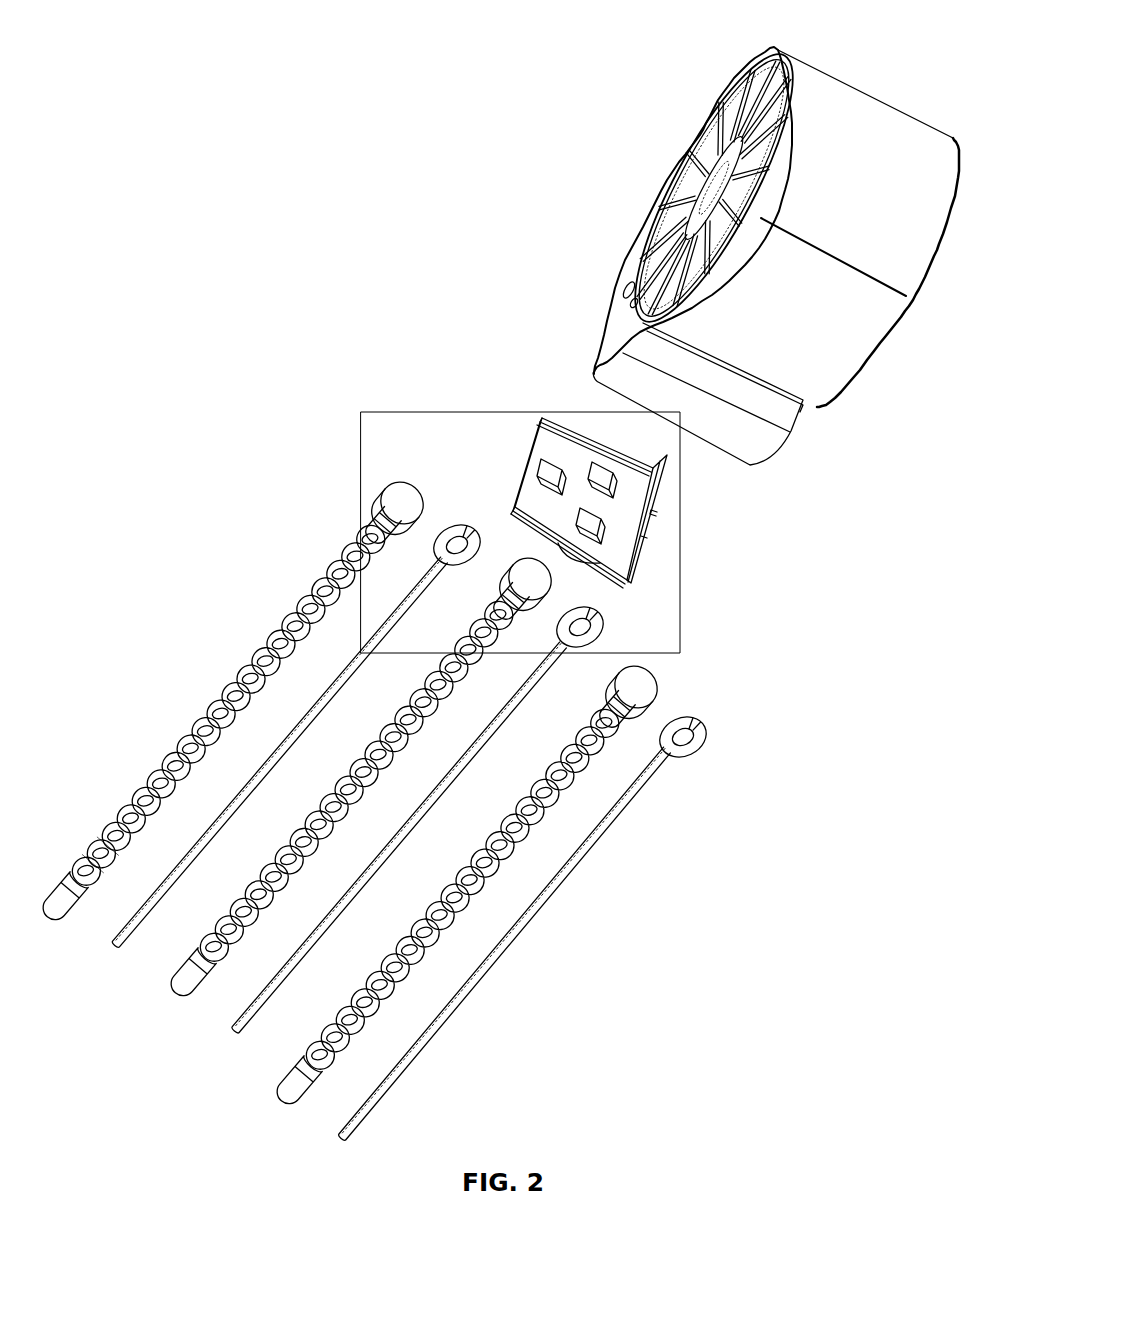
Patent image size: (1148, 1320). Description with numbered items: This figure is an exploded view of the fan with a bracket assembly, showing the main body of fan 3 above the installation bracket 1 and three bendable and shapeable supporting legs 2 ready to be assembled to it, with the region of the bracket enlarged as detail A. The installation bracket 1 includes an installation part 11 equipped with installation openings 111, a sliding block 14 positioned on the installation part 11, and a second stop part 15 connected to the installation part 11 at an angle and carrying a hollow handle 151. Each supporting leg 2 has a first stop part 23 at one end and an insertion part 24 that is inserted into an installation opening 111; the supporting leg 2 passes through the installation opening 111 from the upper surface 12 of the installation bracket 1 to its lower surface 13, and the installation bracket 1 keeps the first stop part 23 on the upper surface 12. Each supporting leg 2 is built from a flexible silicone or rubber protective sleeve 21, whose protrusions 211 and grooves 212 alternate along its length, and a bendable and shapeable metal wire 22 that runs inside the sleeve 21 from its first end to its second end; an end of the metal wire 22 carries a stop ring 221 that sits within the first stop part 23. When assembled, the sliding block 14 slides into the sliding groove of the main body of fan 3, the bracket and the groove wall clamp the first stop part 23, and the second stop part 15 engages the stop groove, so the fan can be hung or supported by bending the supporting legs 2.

The installation bracket 1 is at (628, 486).
The installation part 11 is at (623, 537).
The installation opening 111 is at (537, 457).
The upper surface 12 is at (567, 463).
The lower surface 13 is at (607, 567).
The sliding block 14 is at (513, 517).
The second stop part 15 is at (663, 488).
The hollow handle 151 is at (657, 512).
The supporting leg 2 is at (406, 736).
The flexible protective sleeve 21 is at (210, 707).
The protrusions 211 is at (102, 817).
The grooves 212 is at (97, 873).
The metal wire 22 is at (333, 690).
The stop ring 221 is at (692, 757).
The first stop part 23 is at (383, 493).
The insertion part 24 is at (371, 525).
The main body of fan 3 is at (612, 258).
The enlarged region A is at (682, 462).